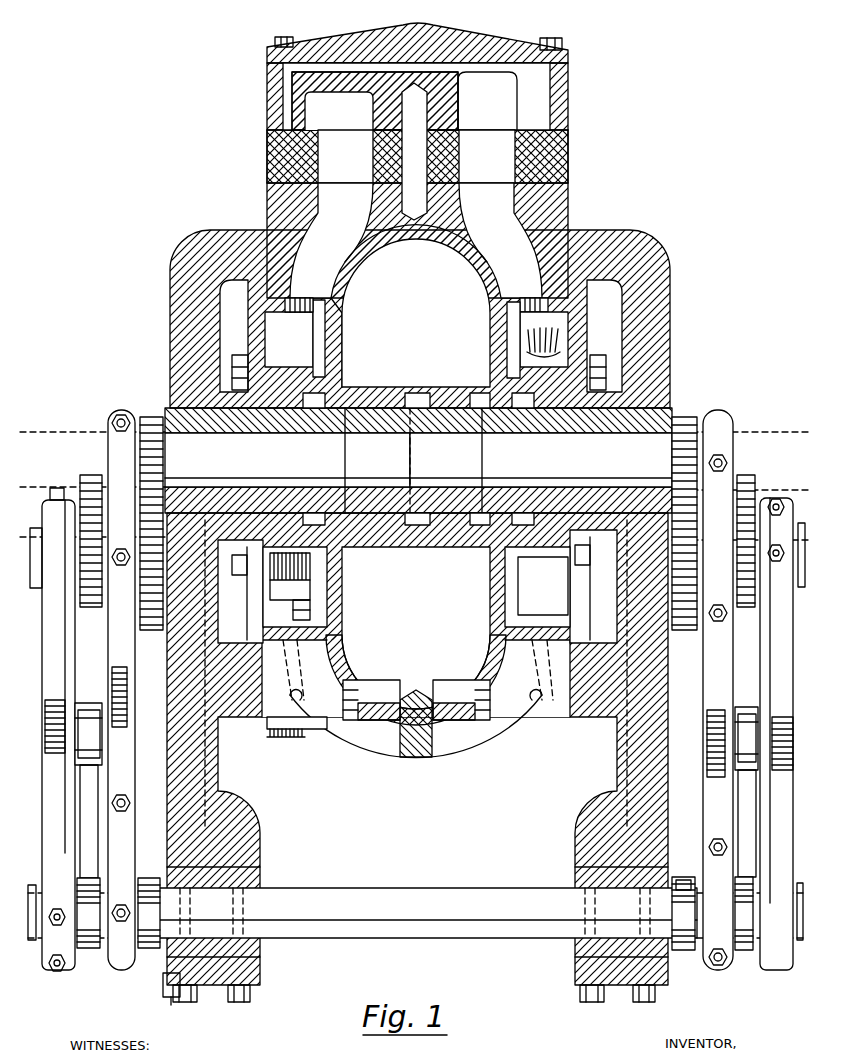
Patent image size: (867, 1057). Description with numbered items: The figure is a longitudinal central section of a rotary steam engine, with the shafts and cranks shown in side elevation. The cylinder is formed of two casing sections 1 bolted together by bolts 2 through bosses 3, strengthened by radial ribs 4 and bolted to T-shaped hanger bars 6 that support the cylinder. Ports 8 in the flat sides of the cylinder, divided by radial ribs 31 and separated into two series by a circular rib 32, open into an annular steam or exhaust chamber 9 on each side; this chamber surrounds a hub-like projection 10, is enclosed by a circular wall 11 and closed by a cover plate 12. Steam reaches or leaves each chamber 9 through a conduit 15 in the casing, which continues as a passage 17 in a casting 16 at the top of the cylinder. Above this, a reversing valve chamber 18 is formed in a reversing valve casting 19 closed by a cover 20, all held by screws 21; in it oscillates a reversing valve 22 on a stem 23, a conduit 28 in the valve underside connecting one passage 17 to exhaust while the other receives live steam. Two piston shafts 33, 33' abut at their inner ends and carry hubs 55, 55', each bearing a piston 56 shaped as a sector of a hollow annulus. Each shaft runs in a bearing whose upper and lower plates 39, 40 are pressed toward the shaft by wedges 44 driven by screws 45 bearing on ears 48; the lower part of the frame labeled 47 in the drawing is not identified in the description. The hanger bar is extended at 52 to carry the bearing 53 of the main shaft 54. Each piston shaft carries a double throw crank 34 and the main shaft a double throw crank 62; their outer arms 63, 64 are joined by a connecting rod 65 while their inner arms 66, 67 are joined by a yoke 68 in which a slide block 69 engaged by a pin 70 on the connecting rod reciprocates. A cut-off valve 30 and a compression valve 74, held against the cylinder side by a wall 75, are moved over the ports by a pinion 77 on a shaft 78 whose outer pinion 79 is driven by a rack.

The cylinder casing sections 1 is at (378, 222).
The bolts 2 is at (602, 363).
The bosses 3 is at (377, 720).
The radial ribs 4 is at (457, 740).
The hanger bars 6 is at (172, 290).
The ports 8 is at (338, 318).
The steam or exhaust chamber 9 is at (268, 602).
The hub-like projection 10 is at (282, 368).
The circular wall 11 is at (315, 637).
The cover plate 12 is at (585, 323).
The conduit 15 is at (607, 208).
The casting 16 is at (545, 166).
The passages 17 is at (337, 126).
The reversing valve chamber 18 is at (533, 68).
The reversing valve casting 19 is at (272, 90).
The cover 20 is at (440, 37).
The screws 21 is at (276, 44).
The reversing valve 22 is at (388, 92).
The stem 23 is at (509, 261).
The conduit 28 is at (338, 105).
The cut-off valve 30 is at (318, 575).
The radial ribs 31 is at (338, 318).
The circular rib 32 is at (342, 330).
The piston shaft 33 is at (415, 486).
The piston shaft 33' is at (541, 460).
The double throw crank 34 is at (148, 632).
The upper plate 39 is at (656, 417).
The lower plate 40 is at (330, 498).
The wedges 44 is at (277, 402).
The screws 45 is at (176, 393).
The lower body 47 is at (181, 732).
The ears 48 is at (225, 385).
The extended central member 52 is at (200, 777).
The bearing 53 is at (262, 880).
The main shaft 54 is at (453, 900).
The hub 55 is at (366, 545).
The hub 55' is at (481, 551).
The piston 56 is at (400, 300).
The double throw crank 62 is at (150, 937).
The outer arm 63 is at (85, 473).
The outer arm 64 is at (90, 948).
The connecting rod 65 is at (48, 793).
The inner arm 66 is at (148, 417).
The inner arm 67 is at (148, 893).
The yoke 68 is at (112, 662).
The slide block 69 is at (102, 807).
The pin 70 is at (88, 747).
The compression valve 74 is at (513, 327).
The wall 75 is at (538, 617).
The pinion 77 is at (268, 598).
The shaft 78 is at (312, 600).
The pinion 79 is at (288, 734).